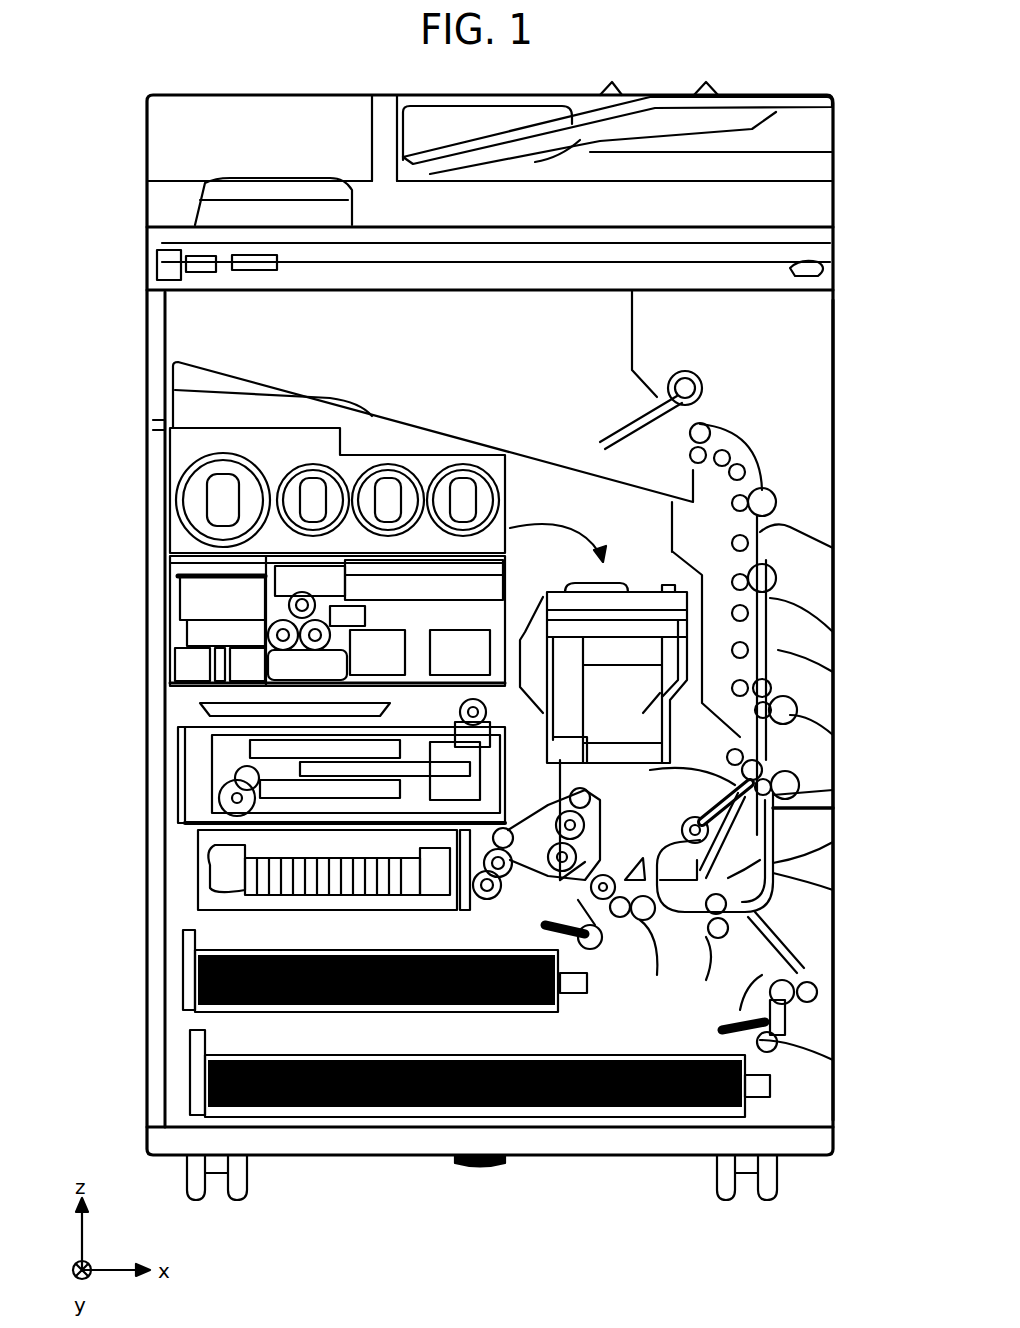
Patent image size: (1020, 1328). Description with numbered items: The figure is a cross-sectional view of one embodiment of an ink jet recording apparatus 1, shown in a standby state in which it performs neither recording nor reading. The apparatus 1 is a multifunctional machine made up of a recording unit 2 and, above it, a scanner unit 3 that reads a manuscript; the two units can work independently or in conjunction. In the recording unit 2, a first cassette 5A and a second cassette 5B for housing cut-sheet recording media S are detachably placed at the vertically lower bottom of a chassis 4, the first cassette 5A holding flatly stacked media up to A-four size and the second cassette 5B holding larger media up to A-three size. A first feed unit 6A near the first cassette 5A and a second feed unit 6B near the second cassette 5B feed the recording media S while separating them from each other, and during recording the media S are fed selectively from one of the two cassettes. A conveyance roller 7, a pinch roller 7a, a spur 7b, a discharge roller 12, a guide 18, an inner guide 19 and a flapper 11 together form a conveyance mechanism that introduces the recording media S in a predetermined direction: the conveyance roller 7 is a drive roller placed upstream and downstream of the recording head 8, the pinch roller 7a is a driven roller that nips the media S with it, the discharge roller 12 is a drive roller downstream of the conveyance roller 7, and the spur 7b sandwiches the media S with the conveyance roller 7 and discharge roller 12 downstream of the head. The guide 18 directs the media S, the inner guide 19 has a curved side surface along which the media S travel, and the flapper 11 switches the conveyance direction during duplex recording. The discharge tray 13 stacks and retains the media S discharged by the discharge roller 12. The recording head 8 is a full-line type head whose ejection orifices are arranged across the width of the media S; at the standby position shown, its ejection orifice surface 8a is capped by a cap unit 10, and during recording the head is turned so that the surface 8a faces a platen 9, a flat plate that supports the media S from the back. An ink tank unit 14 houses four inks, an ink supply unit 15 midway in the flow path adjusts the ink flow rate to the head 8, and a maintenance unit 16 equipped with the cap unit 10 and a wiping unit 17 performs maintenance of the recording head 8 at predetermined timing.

The ink jet recording apparatus 1 is at (778, 80).
The recording unit 2 is at (84, 1150).
The scanner unit 3 is at (147, 290).
The chassis 4 is at (836, 374).
The first cassette 5A is at (188, 976).
The second cassette 5B is at (190, 1085).
The first feed unit 6A is at (600, 948).
The second feed unit 6B is at (775, 1044).
The conveyance roller 7 is at (795, 788).
The pinch roller 7a is at (650, 930).
The spur 7b is at (765, 600).
The recording head 8 is at (795, 716).
The ejection orifice surface 8a is at (772, 800).
The platen 9 is at (730, 815).
The cap unit 10 is at (768, 862).
The flapper 11 is at (700, 664).
The discharge roller 12 is at (710, 430).
The discharge tray 13 is at (430, 426).
The ink tank unit 14 is at (164, 460).
The ink supply unit 15 is at (166, 628).
The maintenance unit 16 is at (185, 866).
The wiping unit 17 is at (182, 740).
The guide 18 is at (765, 520).
The inner guide 19 is at (768, 897).
The recording media S is at (237, 962).